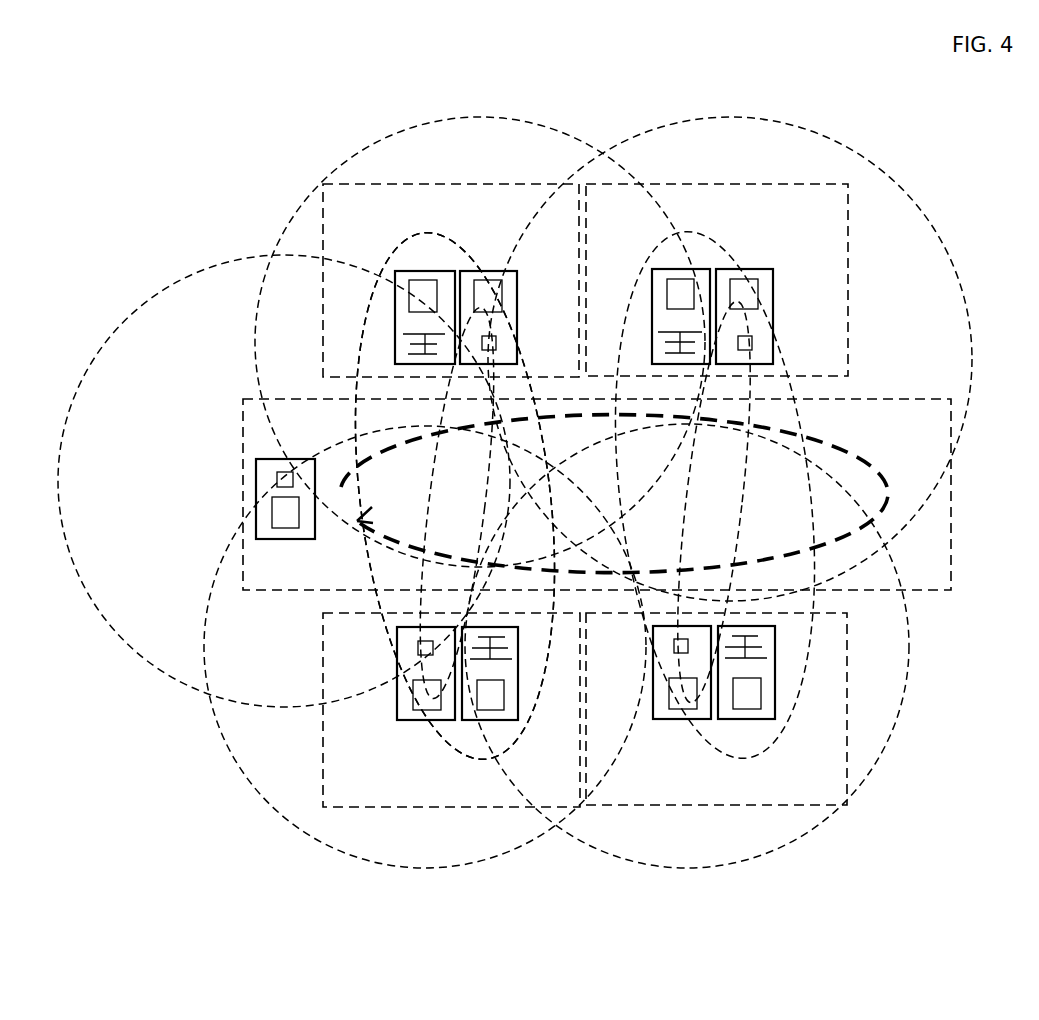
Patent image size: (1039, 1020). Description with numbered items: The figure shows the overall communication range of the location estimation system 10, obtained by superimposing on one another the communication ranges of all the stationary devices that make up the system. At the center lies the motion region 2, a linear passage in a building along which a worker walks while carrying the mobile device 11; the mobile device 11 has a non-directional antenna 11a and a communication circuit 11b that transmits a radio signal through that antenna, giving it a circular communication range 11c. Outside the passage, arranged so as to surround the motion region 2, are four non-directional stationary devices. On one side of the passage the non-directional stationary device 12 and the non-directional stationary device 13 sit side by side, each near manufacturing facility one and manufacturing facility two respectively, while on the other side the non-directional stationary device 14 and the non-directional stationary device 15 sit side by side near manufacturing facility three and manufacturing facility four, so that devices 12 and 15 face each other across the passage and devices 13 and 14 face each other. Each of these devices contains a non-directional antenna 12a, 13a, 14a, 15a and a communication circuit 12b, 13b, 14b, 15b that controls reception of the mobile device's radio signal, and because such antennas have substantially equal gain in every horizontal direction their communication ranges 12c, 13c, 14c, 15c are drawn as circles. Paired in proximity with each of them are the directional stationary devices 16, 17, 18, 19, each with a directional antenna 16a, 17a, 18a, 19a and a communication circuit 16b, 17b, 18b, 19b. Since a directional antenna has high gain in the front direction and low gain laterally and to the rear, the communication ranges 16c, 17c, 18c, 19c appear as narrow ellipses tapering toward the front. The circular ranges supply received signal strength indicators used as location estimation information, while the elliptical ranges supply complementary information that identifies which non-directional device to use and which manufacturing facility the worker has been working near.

The motion region 2 is at (888, 409).
The location estimation system 10 is at (962, 214).
The mobile device 11 is at (253, 483).
The non-directional antenna 11a is at (278, 478).
The communication circuit 11b is at (273, 515).
The communication range 11c is at (168, 287).
The non-directional stationary device 12 is at (516, 301).
The non-directional antenna 12a is at (497, 343).
The communication circuit 12b is at (504, 300).
The communication range 12c is at (483, 117).
The non-directional stationary device 13 is at (774, 301).
The non-directional antenna 13a is at (753, 343).
The communication circuit 13b is at (760, 300).
The communication range 13c is at (742, 117).
The non-directional stationary device 14 is at (654, 691).
The non-directional antenna 14a is at (674, 648).
The communication circuit 14b is at (669, 695).
The communication range 14c is at (762, 855).
The non-directional stationary device 15 is at (397, 692).
The non-directional antenna 15a is at (418, 650).
The communication circuit 15b is at (413, 695).
The communication range 15c is at (505, 857).
The directional stationary device 16 is at (396, 301).
The directional antenna 16a is at (410, 344).
The communication circuit 16b is at (410, 298).
The communication range 16c is at (388, 611).
The directional stationary device 17 is at (652, 301).
The directional antenna 17a is at (666, 344).
The communication circuit 17b is at (668, 298).
The communication range 17c is at (743, 418).
The directional stationary device 18 is at (775, 691).
The directional antenna 18a is at (763, 648).
The communication circuit 18b is at (762, 695).
The communication range 18c is at (810, 606).
The directional stationary device 19 is at (517, 692).
The directional antenna 19a is at (506, 648).
The communication circuit 19b is at (505, 695).
The communication range 19c is at (520, 737).